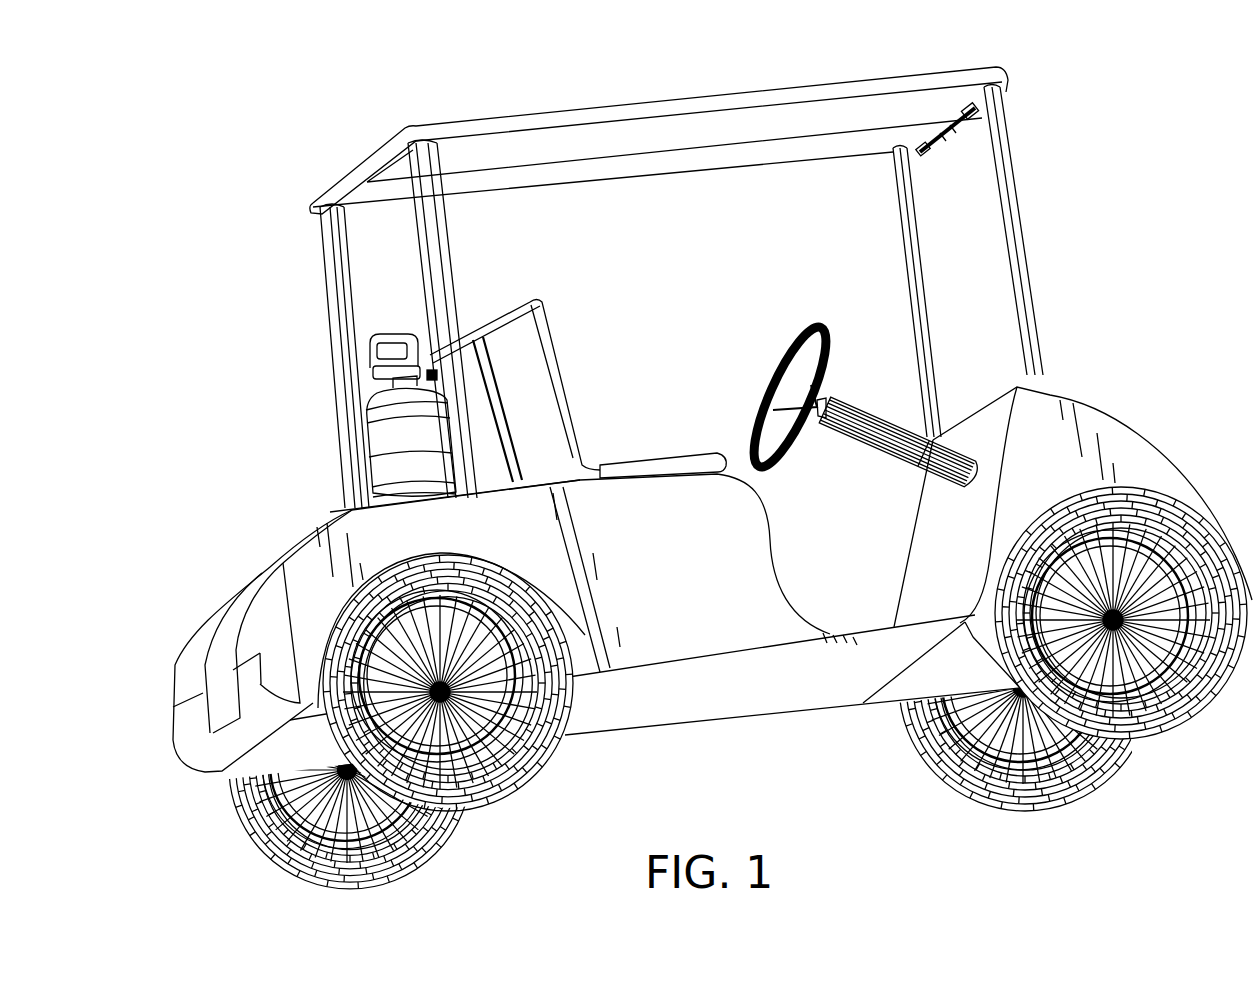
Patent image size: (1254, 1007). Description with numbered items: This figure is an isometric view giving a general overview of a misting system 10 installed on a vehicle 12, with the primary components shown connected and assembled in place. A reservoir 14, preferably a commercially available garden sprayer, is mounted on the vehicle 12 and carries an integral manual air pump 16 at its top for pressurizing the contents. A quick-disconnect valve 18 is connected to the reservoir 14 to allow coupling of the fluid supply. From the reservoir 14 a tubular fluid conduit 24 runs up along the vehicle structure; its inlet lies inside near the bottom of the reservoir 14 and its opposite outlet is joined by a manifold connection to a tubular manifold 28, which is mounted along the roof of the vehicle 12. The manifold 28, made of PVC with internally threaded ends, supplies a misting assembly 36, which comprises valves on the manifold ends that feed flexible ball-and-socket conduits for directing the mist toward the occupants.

The misting system 10 is at (242, 406).
The vehicle 12 is at (1160, 418).
The reservoir 14 is at (380, 442).
The manual air pump 16 is at (378, 337).
The quick-disconnect valve 18 is at (447, 270).
The fluid conduit 24 is at (548, 162).
The manifold 28 is at (963, 124).
The misting assembly 36 is at (951, 182).